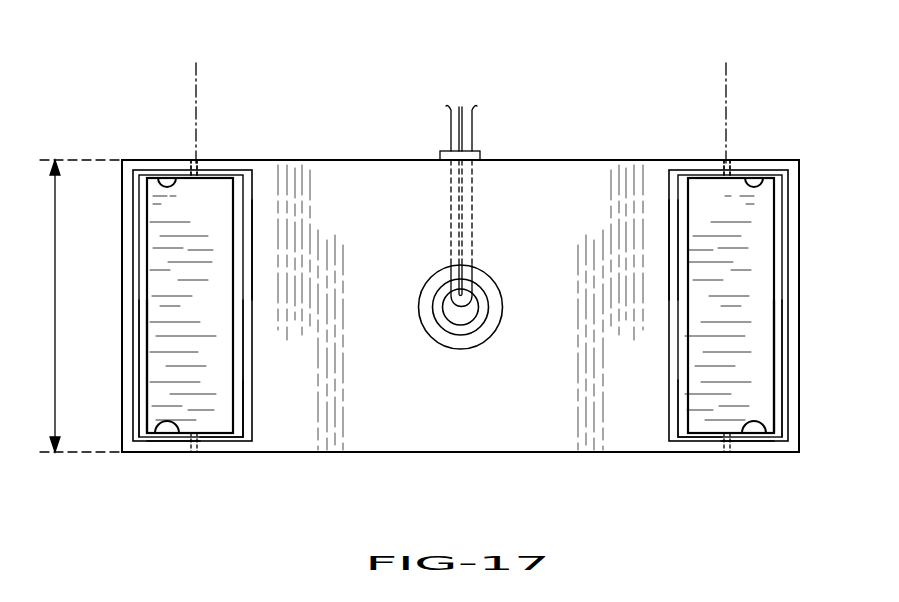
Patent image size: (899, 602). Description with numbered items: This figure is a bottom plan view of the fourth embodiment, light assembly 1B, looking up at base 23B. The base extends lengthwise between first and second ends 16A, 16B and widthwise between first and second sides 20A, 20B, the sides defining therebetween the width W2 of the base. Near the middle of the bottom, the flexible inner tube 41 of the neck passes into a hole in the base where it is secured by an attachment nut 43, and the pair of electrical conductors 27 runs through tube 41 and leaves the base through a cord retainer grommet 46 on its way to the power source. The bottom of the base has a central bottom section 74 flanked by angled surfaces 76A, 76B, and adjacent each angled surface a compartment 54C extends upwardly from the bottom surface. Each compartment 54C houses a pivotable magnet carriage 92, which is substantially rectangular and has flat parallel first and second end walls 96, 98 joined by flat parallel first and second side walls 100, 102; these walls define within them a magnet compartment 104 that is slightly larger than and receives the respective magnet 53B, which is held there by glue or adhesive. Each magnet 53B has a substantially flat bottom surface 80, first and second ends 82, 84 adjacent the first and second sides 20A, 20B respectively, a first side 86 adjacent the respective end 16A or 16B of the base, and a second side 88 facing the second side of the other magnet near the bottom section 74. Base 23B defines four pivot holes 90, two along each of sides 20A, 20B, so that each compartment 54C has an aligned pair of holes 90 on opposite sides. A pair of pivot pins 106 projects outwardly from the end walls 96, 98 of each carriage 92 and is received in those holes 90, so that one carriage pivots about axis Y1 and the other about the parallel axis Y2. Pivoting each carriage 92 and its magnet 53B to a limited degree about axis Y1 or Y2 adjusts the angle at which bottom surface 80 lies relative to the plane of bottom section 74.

The light assembly 1B is at (596, 81).
The first end 16A is at (122, 233).
The second end 16B is at (800, 212).
The first side 20A is at (620, 160).
The second side 20B is at (522, 452).
The base 23B is at (365, 152).
The electrical conductors 27 is at (472, 121).
The inner tube 41 is at (437, 298).
The attachment nut 43 is at (482, 335).
The cord retainer grommet 46 is at (450, 150).
The magnet 53B is at (214, 315).
The compartment 54C is at (160, 445).
The bottom section 74 is at (427, 420).
The angled surface 76A is at (173, 443).
The angled surface 76B is at (748, 445).
The bottom surface 80 is at (165, 263).
The first end 82 is at (212, 178).
The second end 84 is at (212, 433).
The first side 86 is at (147, 377).
The second side 88 is at (237, 407).
The pivot hole 90 is at (193, 160).
The magnet carriage 92 is at (256, 234).
The first end wall 96 is at (225, 173).
The second end wall 98 is at (225, 440).
The first side wall 100 is at (140, 345).
The second side wall 102 is at (243, 353).
The magnet compartment 104 is at (160, 180).
The pivot pin 106 is at (460, 169).
The width W2 is at (80, 306).
The axis Y1 is at (196, 66).
The axis Y2 is at (726, 66).